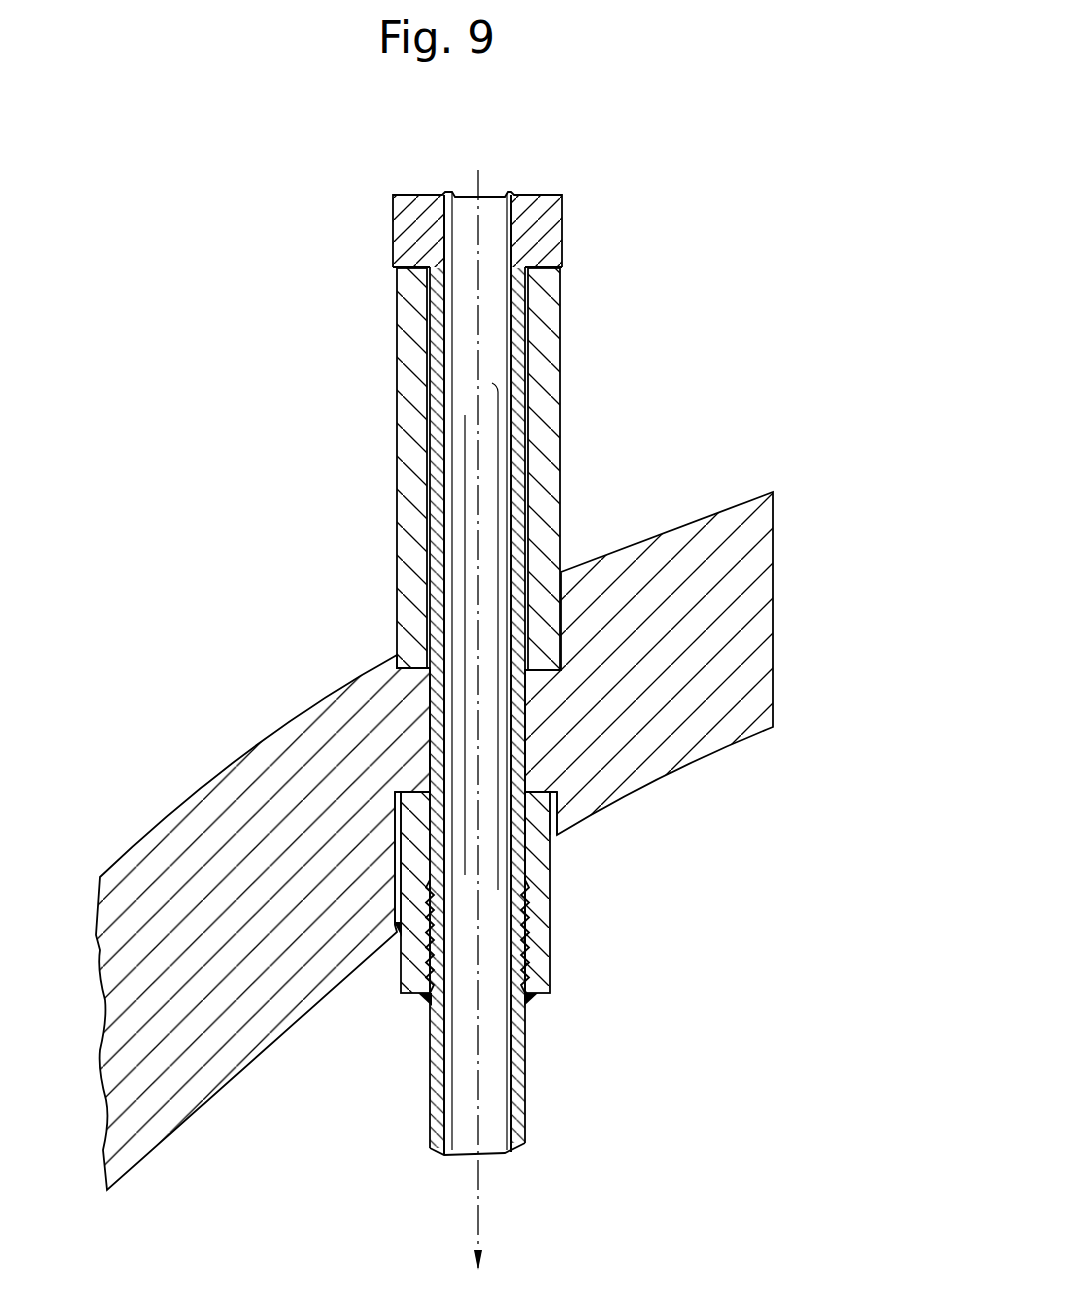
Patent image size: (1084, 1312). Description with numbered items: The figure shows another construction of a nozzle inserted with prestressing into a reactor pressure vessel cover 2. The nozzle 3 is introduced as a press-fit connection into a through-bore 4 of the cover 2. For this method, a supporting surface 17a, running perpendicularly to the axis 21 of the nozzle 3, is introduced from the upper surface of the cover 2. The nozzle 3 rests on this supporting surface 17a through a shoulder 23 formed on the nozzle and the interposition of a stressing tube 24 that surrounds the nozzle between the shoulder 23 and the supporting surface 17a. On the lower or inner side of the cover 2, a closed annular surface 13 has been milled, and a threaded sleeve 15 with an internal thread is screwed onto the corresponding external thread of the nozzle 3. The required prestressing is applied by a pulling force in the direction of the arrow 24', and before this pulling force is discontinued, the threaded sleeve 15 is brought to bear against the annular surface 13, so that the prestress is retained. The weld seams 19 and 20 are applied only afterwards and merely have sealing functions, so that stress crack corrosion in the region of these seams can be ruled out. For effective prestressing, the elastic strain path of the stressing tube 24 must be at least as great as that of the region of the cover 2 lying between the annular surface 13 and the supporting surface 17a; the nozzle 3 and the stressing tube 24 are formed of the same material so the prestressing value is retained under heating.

The reactor pressure vessel cover 2 is at (218, 797).
The nozzle 3 is at (550, 226).
The through-bore 4 is at (428, 712).
The annular surface 13 is at (407, 790).
The threaded sleeve 15 is at (535, 877).
The supporting surface 17a is at (537, 675).
The weld seam 19 is at (400, 933).
The weld seam 20 is at (430, 1000).
The axis 21 is at (485, 200).
The shoulder 23 is at (400, 266).
The stressing tube 24 is at (442, 469).
The arrow 24' is at (531, 720).